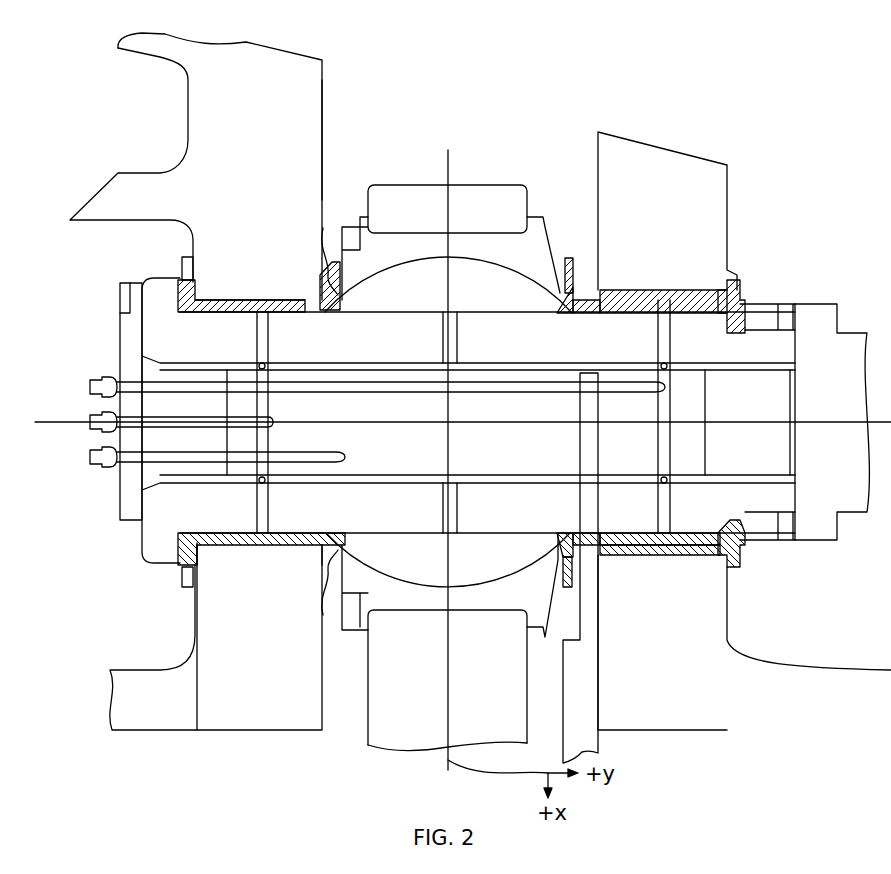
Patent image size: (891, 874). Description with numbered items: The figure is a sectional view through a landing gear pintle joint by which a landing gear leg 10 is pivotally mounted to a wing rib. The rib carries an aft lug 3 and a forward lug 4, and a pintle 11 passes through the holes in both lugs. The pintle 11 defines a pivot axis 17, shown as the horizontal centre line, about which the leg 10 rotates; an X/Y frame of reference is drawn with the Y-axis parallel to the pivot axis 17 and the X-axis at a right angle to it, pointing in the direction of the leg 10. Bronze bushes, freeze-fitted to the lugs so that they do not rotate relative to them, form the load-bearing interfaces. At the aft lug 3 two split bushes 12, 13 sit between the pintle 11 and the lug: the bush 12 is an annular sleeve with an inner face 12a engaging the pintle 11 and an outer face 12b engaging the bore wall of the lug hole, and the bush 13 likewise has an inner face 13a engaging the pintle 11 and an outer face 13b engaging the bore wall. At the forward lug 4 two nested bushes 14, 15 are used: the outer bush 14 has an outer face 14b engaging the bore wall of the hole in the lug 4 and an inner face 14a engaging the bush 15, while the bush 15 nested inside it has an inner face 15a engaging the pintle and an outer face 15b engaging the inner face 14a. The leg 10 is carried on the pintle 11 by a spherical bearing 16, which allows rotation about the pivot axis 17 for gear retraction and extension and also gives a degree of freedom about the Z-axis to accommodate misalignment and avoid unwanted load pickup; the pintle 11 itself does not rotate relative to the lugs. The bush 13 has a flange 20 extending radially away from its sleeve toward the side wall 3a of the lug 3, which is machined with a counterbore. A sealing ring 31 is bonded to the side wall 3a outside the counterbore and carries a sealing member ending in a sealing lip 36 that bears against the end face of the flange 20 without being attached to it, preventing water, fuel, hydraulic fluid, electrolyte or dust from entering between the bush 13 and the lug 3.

The aft lug 3 is at (278, 60).
The side wall 3a is at (322, 105).
The forward lug 4 is at (672, 160).
The leg 10 is at (368, 740).
The pintle 11 is at (276, 518).
The split bush 12 is at (204, 568).
The inner face 12a is at (225, 316).
The outer face 12b is at (216, 300).
The split bush 13 is at (302, 568).
The inner face 13a is at (312, 538).
The outer face 13b is at (282, 305).
The nested bush 14 is at (660, 282).
The inner face 14a is at (708, 318).
The outer face 14b is at (622, 290).
The nested bush 15 is at (636, 325).
The inner face 15a is at (644, 538).
The outer face 15b is at (676, 555).
The spherical bearing 16 is at (470, 590).
The pivot axis 17 is at (500, 420).
The flange 20 is at (320, 290).
The sealing ring 31 is at (330, 228).
The sealing lip 36 is at (190, 605).